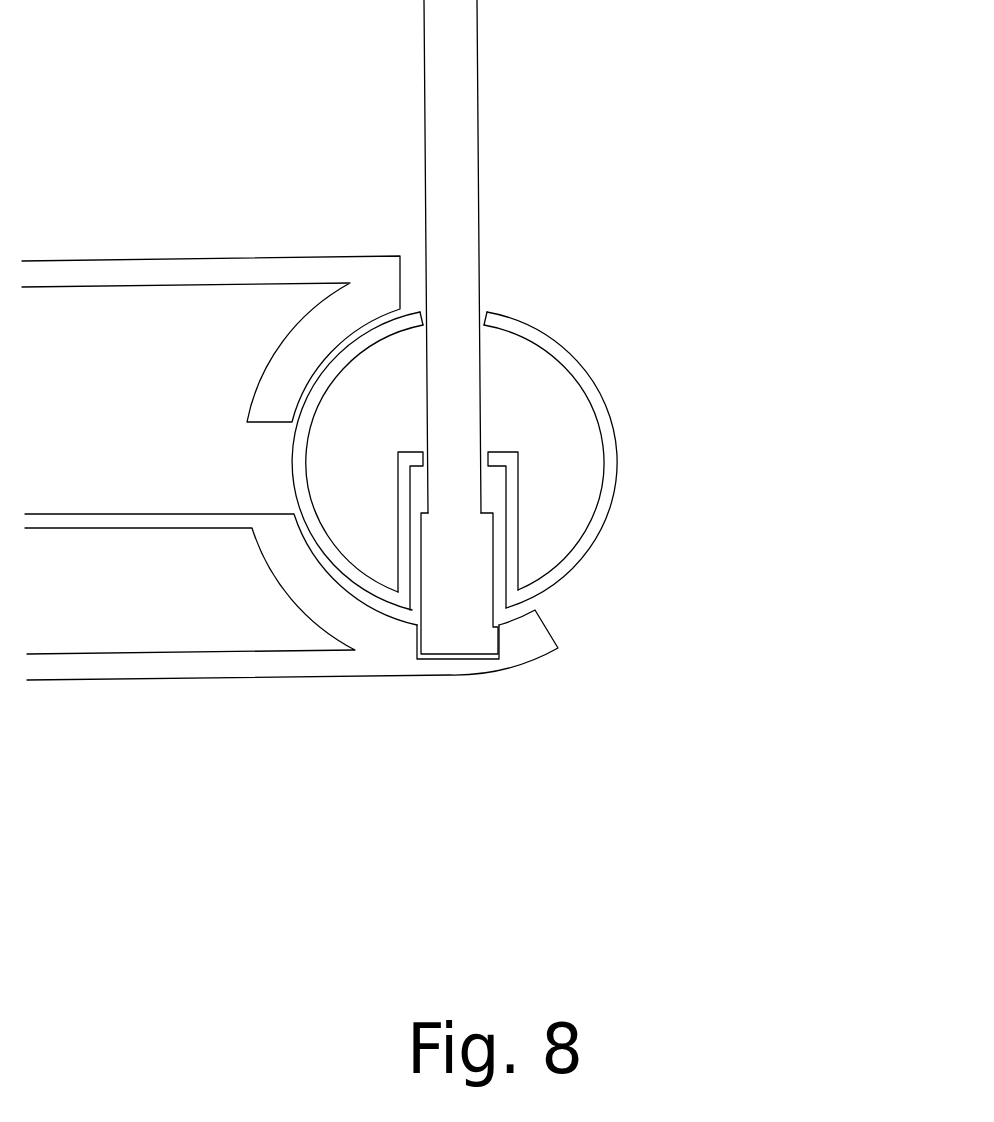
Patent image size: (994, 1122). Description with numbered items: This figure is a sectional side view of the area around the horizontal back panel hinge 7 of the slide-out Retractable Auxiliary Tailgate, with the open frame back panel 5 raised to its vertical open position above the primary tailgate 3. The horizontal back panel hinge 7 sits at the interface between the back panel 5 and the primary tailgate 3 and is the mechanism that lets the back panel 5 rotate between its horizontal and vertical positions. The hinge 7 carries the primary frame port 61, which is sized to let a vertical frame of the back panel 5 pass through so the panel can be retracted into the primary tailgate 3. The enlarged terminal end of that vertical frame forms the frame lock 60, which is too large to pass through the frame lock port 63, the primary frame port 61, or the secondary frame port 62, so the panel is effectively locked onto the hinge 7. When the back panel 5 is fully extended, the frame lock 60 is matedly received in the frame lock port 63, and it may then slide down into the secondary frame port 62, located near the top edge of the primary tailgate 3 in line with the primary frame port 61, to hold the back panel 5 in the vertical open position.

The primary tailgate 3 is at (78, 248).
The open frame back panel 5 is at (457, 120).
The horizontal back panel hinge 7 is at (552, 347).
The frame lock 60 is at (470, 607).
The primary frame port 61 is at (488, 297).
The secondary frame port 62 is at (460, 665).
The frame lock port 63 is at (493, 477).